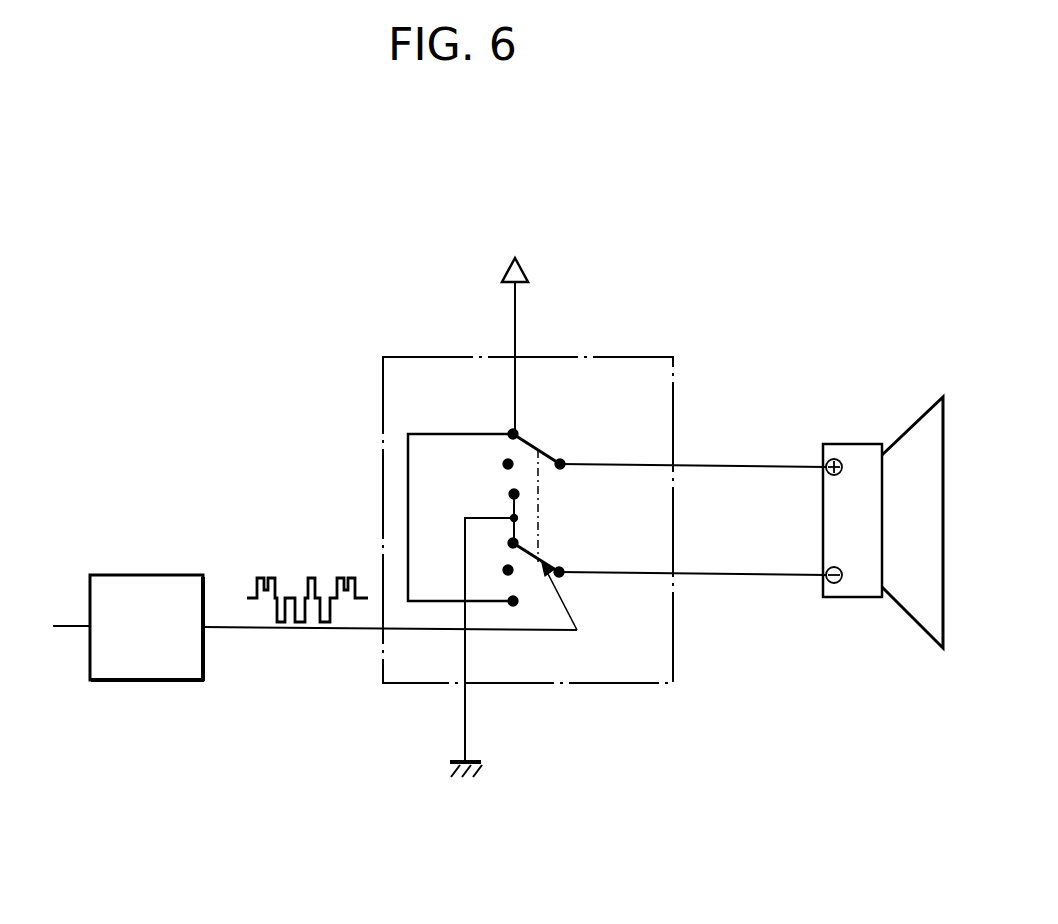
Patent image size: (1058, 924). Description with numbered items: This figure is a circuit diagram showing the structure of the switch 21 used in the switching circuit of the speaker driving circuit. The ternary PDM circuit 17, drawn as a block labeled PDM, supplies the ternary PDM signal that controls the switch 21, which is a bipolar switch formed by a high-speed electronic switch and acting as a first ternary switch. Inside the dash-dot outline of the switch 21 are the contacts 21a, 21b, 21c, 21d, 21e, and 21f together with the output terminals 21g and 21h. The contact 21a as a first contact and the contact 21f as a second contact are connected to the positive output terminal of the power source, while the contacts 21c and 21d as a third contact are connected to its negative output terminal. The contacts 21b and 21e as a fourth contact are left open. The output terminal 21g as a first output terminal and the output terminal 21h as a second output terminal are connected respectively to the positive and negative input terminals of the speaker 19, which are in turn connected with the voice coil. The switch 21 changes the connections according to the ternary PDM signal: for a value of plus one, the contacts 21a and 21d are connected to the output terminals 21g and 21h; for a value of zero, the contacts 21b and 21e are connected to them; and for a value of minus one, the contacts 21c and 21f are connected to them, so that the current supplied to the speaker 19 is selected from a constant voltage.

The ternary PDM circuit 17 is at (112, 575).
The speaker 19 is at (918, 420).
The switch 21 is at (675, 405).
The contact 21a is at (506, 431).
The contact 21b is at (504, 462).
The contact 21c is at (510, 494).
The contact 21d is at (517, 540).
The contact 21e is at (504, 573).
The contact 21f is at (518, 604).
The output terminal 21g is at (563, 461).
The output terminal 21h is at (562, 575).